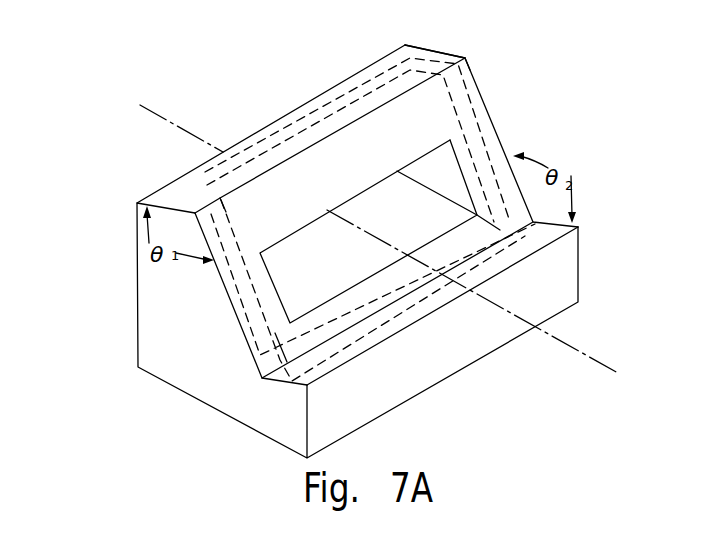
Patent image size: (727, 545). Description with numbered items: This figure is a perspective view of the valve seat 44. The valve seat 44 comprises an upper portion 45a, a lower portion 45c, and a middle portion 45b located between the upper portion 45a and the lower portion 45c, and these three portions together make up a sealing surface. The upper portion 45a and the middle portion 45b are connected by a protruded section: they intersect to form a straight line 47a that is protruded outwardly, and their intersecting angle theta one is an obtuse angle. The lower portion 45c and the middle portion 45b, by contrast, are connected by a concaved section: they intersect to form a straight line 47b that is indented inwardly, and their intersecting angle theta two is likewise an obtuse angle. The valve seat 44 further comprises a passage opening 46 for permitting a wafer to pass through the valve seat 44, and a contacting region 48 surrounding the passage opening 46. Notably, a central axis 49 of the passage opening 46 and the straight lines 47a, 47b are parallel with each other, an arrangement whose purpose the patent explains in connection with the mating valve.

The valve seat 44 is at (123, 141).
The upper portion 45a is at (373, 72).
The middle portion 45b is at (482, 118).
The lower portion 45c is at (551, 229).
The passage opening 46 is at (343, 268).
The straight line 47a is at (330, 118).
The straight line 47b is at (393, 300).
The contacting region 48 is at (458, 63).
The central axis 49 is at (394, 252).